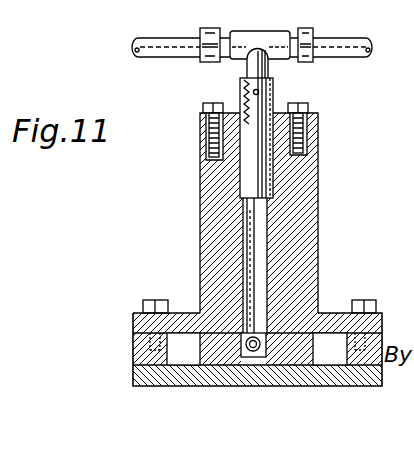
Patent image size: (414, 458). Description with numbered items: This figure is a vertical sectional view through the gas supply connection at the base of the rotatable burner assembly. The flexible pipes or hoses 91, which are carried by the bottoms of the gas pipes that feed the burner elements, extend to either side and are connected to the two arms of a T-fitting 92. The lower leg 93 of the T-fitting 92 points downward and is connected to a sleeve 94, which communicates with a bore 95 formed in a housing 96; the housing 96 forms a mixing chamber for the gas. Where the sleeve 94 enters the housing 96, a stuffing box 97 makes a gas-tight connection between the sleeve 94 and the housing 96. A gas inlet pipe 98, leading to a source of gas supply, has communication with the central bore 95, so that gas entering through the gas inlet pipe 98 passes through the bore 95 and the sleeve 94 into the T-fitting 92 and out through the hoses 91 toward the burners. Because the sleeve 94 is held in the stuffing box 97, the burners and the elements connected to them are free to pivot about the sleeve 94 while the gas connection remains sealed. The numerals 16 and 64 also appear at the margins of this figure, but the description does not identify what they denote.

The adjacent component 16 is at (410, 0).
The adjacent component 64 is at (10, 0).
The flexible pipes or hoses 91 is at (182, 58).
The T-fitting 92 is at (268, 38).
The lower leg 93 is at (269, 65).
The sleeve 94 is at (273, 93).
The bore 95 is at (257, 233).
The housing 96 is at (318, 250).
The stuffing box 97 is at (310, 128).
The gas inlet pipe 98 is at (263, 322).